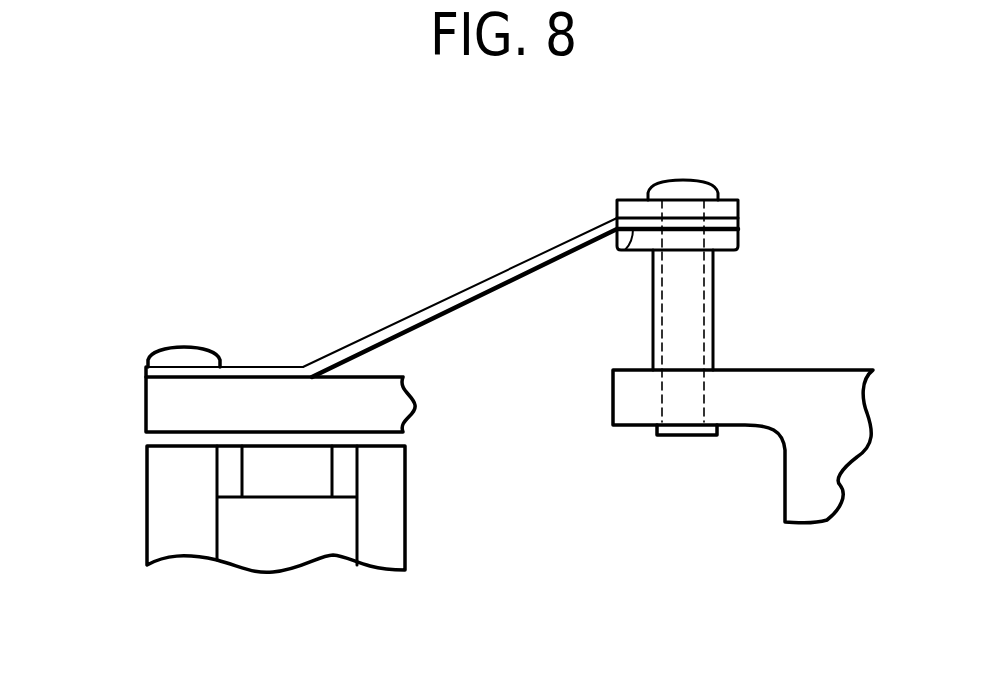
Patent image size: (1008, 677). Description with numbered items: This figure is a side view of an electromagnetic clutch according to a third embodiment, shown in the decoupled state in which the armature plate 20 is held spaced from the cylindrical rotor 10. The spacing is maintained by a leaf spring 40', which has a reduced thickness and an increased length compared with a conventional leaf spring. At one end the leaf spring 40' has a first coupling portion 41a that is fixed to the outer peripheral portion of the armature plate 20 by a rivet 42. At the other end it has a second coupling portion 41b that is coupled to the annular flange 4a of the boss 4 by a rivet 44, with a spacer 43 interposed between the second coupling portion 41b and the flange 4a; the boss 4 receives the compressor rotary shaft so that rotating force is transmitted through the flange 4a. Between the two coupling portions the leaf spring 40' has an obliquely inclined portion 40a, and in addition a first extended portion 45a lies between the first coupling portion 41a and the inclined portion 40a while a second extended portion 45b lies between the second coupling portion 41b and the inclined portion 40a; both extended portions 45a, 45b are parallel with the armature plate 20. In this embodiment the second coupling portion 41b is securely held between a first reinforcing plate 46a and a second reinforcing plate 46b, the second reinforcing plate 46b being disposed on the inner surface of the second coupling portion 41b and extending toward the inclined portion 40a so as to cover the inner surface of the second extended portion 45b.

The boss 4 is at (838, 368).
The annular flange 4a is at (628, 413).
The cylindrical rotor 10 is at (392, 532).
The armature plate 20 is at (157, 402).
The leaf spring 40' is at (442, 317).
The inclined portion 40a is at (443, 305).
The first coupling portion 41a is at (145, 370).
The second coupling portion 41b is at (730, 224).
The rivet 42 is at (172, 352).
The spacer 43 is at (713, 325).
The rivet 44 is at (685, 185).
The first extended portion 45a is at (253, 368).
The second extended portion 45b is at (622, 253).
The first reinforcing plate 46a is at (726, 205).
The second reinforcing plate 46b is at (740, 240).